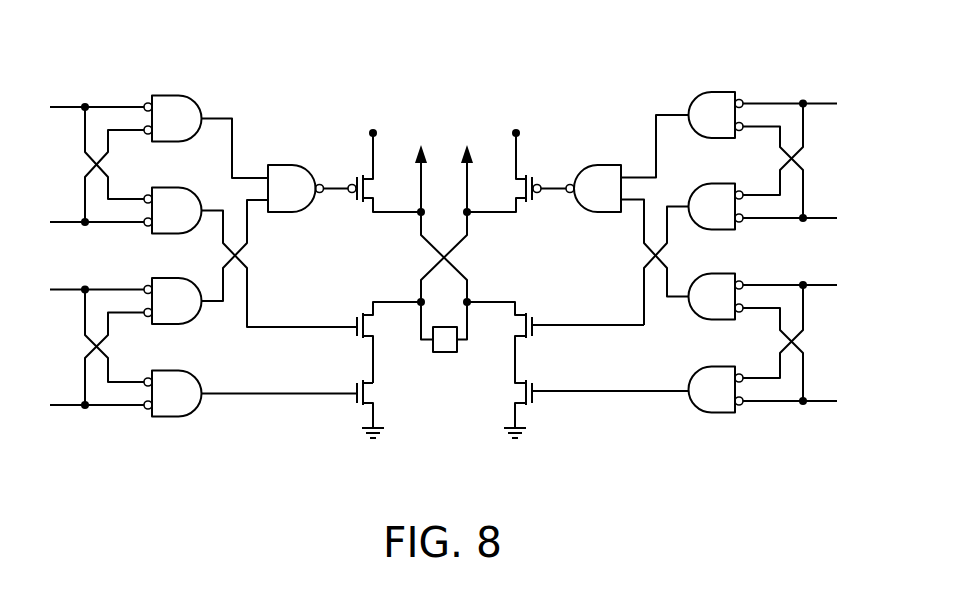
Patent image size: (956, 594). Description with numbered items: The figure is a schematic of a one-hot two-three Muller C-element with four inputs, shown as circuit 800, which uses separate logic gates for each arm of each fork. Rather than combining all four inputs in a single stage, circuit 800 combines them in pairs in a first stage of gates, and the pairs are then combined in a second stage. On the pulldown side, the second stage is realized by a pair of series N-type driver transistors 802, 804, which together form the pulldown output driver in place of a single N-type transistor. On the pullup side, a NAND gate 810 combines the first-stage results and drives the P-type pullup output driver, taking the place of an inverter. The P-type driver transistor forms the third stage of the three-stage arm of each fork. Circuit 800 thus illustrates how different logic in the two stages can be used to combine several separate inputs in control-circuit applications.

The circuit 800 is at (561, 90).
The N-type driver transistor 802 is at (355, 320).
The N-type driver transistor 804 is at (355, 400).
The NAND gate 810 is at (281, 165).